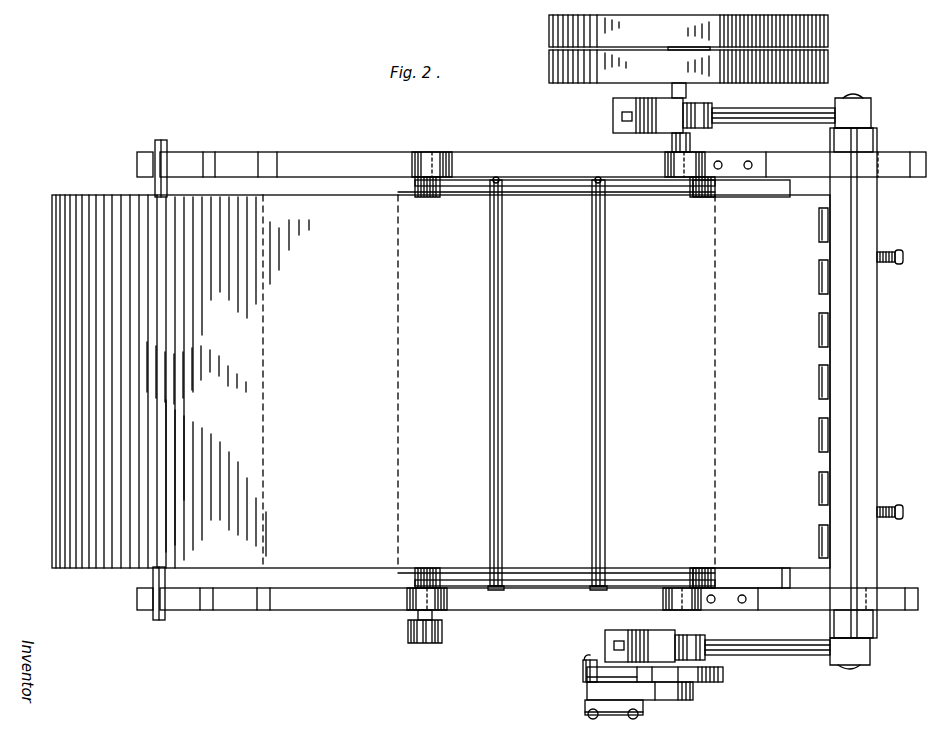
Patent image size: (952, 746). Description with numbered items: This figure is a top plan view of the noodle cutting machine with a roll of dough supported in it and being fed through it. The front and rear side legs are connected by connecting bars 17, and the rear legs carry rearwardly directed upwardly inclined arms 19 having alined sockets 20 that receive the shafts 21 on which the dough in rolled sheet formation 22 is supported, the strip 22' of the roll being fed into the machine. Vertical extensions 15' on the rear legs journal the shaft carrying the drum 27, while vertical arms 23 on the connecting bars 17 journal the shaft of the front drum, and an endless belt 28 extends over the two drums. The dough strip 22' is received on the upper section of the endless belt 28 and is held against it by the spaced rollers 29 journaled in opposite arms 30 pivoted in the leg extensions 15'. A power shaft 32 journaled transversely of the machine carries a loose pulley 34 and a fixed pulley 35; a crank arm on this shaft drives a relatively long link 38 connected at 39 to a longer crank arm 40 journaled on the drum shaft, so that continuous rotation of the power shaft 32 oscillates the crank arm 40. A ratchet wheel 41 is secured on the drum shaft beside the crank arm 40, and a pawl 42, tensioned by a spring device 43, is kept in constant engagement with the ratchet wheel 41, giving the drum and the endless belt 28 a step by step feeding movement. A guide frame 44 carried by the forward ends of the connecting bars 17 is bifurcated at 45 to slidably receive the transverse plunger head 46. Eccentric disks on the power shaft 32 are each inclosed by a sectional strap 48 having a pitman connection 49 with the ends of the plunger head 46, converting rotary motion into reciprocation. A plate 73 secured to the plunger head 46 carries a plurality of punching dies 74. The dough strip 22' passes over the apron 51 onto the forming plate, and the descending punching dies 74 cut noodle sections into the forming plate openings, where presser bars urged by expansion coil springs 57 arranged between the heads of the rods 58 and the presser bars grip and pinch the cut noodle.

The vertical extensions 15' is at (407, 384).
The connecting bars 17 is at (476, 600).
The rearwardly directed upwardly inclined arm 19 is at (543, 381).
The alined sockets 20 is at (126, 160).
The shafts 21 is at (160, 140).
The roll of dough 22 is at (416, 381).
The dough strip 22' is at (556, 381).
The vertical arms 23 is at (672, 165).
The drum 27 is at (428, 643).
The endless belt 28 is at (652, 194).
The spaced rollers 29 is at (592, 386).
The arms 30 is at (540, 180).
The power shaft 32 is at (672, 143).
The loose pulley 34 is at (830, 33).
The fixed pulley 35 is at (830, 68).
The link 38 is at (620, 708).
The connection 39 is at (588, 715).
The crank arm 40 is at (652, 700).
The ratchet wheel 41 is at (716, 682).
The pawl 42 is at (590, 684).
The spring device 43 is at (591, 660).
The guide frame 44 is at (808, 381).
The bifurcations 45 is at (880, 150).
The plunger head 46 is at (877, 385).
The sectional strap 48 is at (662, 108).
The pitman connection 49 is at (770, 108).
The apron 51 is at (741, 383).
The expansion coil springs 57 is at (887, 252).
The rods 58 is at (903, 256).
The plate 73 is at (819, 408).
The punching dies 74 is at (819, 290).